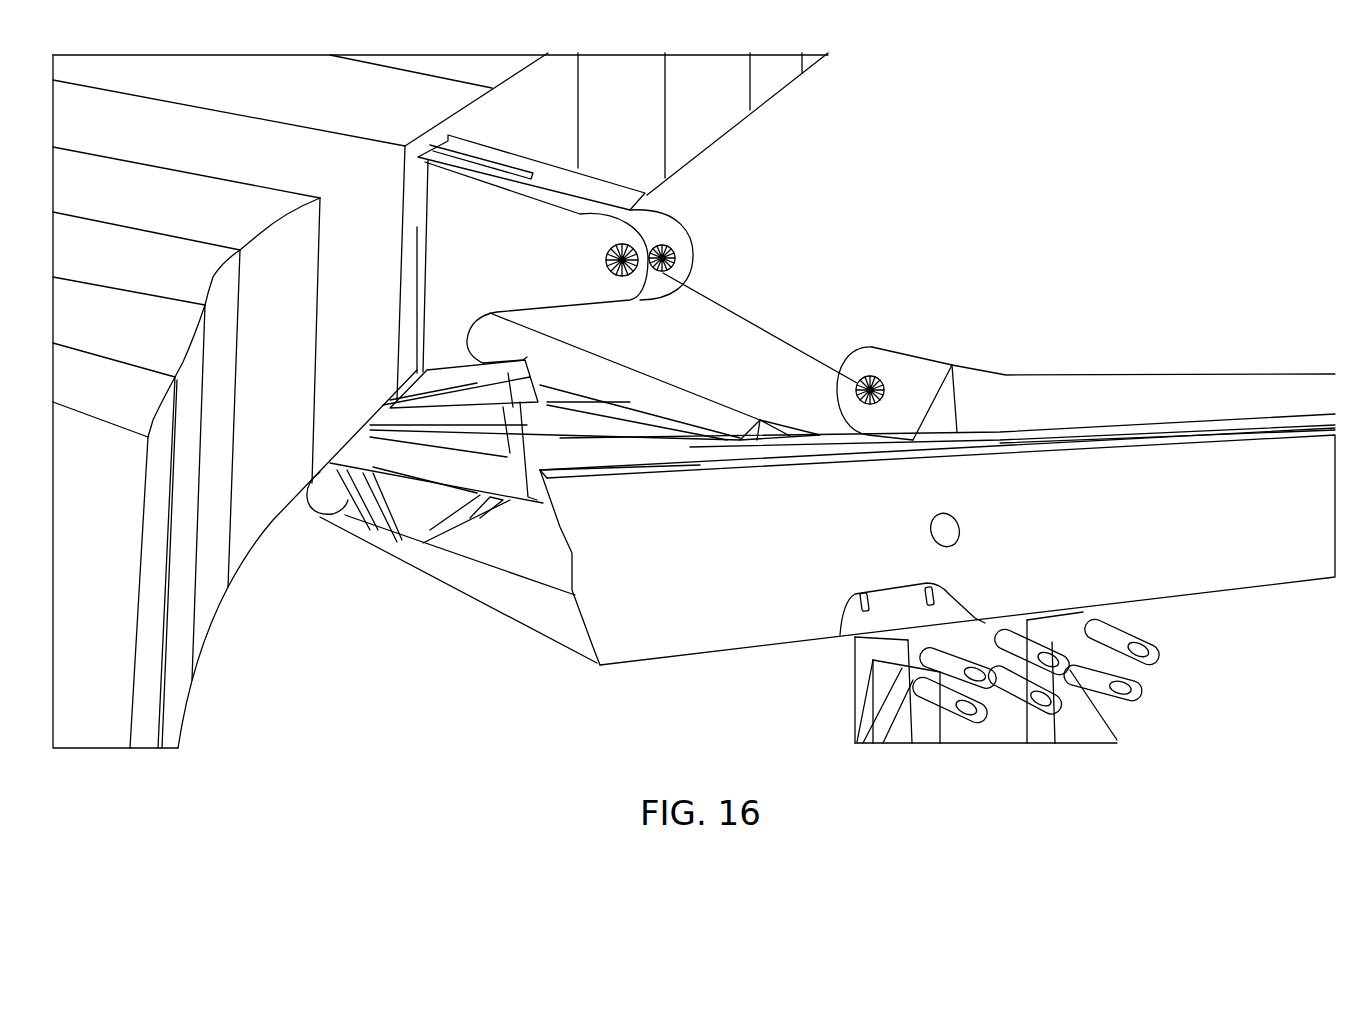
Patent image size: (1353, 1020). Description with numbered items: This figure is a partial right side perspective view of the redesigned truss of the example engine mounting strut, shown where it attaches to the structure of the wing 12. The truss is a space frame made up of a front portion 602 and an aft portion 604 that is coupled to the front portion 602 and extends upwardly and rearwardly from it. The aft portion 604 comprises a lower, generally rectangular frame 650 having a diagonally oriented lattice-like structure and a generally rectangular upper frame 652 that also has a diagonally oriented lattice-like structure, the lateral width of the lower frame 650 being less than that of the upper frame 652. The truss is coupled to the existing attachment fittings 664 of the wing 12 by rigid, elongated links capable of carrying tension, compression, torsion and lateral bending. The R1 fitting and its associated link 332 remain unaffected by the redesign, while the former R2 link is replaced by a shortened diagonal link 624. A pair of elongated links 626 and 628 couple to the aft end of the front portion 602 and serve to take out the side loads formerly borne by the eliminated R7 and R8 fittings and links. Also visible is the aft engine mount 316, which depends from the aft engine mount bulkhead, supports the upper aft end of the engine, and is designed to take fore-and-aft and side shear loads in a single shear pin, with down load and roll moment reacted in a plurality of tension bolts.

The wing 12 is at (713, 128).
The attachment fittings 664 is at (692, 248).
The link 332 is at (777, 337).
The R1 fitting R1 is at (871, 347).
The elongated link 626 is at (678, 390).
The elongated link 628 is at (528, 382).
The front portion 602 is at (1017, 313).
The diagonal link 624 is at (327, 515).
The upper frame 652 is at (402, 468).
The lower frame 650 is at (535, 602).
The aft portion 604 is at (336, 622).
The aft engine mount 316 is at (1100, 708).